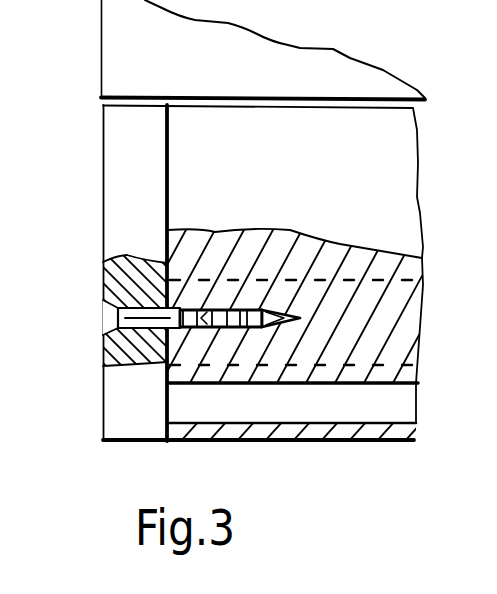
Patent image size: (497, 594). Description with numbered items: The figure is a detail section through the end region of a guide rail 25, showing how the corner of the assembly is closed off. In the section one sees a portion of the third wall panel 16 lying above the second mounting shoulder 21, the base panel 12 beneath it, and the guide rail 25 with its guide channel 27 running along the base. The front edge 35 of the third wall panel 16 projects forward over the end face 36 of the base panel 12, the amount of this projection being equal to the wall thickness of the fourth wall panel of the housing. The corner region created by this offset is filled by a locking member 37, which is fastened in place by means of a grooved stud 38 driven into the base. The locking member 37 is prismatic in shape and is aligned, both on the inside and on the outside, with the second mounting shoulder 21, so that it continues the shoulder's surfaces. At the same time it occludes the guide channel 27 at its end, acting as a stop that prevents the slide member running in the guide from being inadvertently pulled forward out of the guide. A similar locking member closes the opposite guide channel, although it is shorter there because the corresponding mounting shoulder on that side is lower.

The front edge 35 is at (100, 49).
The third wall panel 16 is at (253, 62).
The locking member 37 is at (127, 170).
The end face 36 is at (193, 240).
The grooved stud 38 is at (266, 246).
The second mounting shoulder 21 is at (377, 186).
The base panel 12 is at (356, 341).
The guide rail 25 is at (374, 434).
The guide channel 27 is at (397, 402).